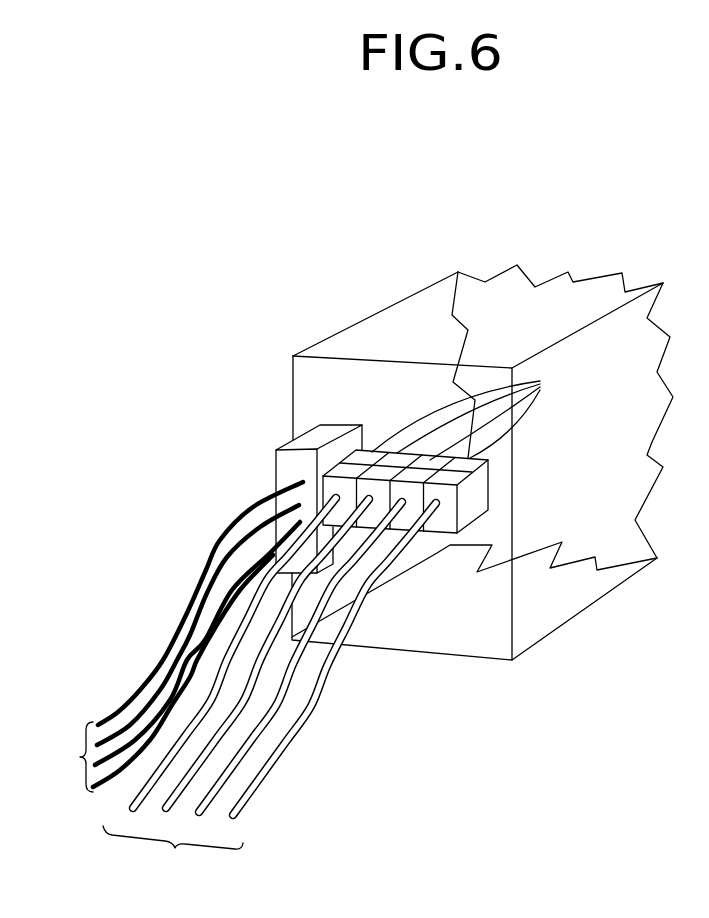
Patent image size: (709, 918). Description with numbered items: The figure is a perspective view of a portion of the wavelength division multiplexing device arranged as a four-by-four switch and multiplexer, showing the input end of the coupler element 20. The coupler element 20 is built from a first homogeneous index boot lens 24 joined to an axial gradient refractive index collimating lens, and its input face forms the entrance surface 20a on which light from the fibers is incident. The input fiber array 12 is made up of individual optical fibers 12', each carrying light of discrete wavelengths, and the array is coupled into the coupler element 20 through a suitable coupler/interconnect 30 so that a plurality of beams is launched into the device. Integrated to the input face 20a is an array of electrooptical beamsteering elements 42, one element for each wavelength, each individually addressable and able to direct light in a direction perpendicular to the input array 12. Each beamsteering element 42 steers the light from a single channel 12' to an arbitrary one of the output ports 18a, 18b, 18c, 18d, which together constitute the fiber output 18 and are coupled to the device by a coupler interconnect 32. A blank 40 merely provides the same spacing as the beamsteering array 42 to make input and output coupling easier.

The coupler element 20 is at (482, 415).
The entrance surface 20a is at (410, 390).
The first homogeneous index boot lens 24 is at (490, 320).
The blank 40 is at (472, 415).
The coupler/interconnect 30 is at (284, 468).
The electrooptical beamsteering elements 42 is at (302, 442).
The coupler interconnect 32 is at (352, 513).
The input fiber array 12 is at (176, 637).
The optical fiber 12' is at (198, 634).
The optical fiber output 18 is at (269, 690).
The output port 18a is at (207, 718).
The output port 18b is at (257, 688).
The output port 18c is at (300, 666).
The output port 18d is at (350, 623).